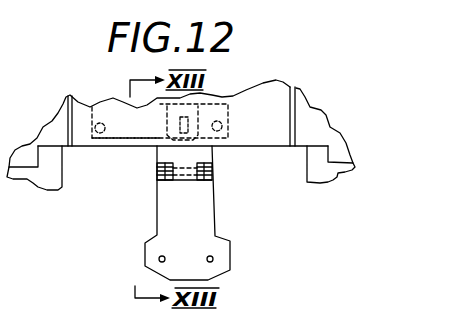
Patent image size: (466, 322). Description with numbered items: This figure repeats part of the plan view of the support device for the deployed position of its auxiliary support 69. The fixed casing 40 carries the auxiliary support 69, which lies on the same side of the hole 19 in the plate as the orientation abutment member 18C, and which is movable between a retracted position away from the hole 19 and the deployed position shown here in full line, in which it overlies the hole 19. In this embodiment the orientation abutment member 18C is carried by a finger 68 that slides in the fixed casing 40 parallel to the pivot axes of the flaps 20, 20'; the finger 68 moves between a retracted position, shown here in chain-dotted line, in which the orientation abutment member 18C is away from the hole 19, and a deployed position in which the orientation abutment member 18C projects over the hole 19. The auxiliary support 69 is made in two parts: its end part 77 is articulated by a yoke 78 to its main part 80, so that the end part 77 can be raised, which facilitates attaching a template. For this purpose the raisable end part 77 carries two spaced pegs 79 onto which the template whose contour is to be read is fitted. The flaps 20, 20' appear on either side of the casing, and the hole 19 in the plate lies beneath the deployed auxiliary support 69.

The hole 19 is at (293, 132).
The flap 20 is at (54, 190).
The flap 20' is at (325, 201).
The finger 68 is at (214, 98).
The fixed casing 40 is at (137, 133).
The orientation abutment member 18C is at (150, 138).
The end part 77 is at (167, 220).
The yoke 78 is at (158, 181).
The auxiliary support 69 is at (213, 153).
The main part 80 is at (298, 165).
The pegs 79 is at (158, 261).